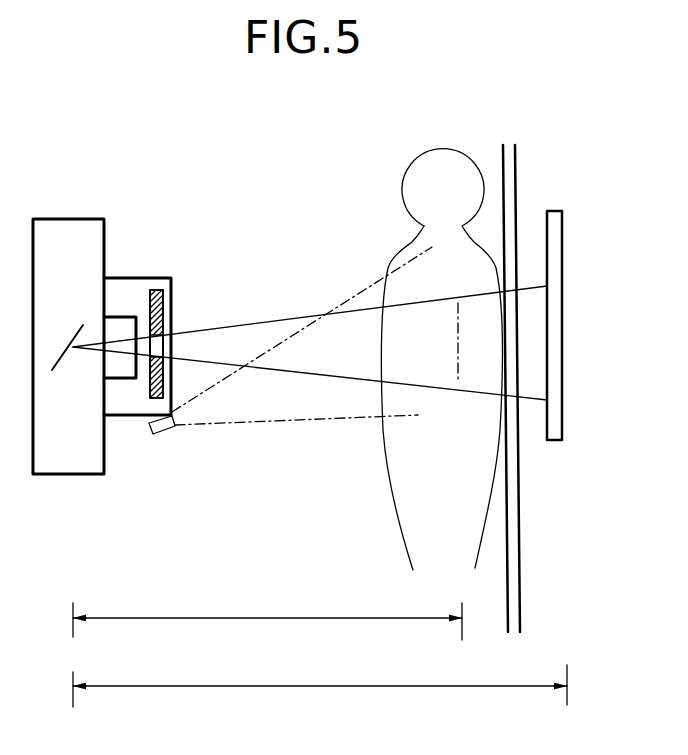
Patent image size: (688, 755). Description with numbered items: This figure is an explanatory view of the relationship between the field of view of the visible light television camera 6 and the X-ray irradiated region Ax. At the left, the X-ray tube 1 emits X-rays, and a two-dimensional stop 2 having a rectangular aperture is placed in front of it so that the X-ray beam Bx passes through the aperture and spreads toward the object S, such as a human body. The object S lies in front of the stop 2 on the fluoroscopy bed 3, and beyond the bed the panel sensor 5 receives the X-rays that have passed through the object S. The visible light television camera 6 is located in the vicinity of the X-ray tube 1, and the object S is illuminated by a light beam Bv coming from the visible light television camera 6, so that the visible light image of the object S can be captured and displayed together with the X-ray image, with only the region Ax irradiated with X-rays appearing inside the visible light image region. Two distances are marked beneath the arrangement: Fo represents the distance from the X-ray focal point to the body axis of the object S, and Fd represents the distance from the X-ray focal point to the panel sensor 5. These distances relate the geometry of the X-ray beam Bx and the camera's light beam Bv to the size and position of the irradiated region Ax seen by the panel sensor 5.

The X-ray tube 1 is at (62, 232).
The two-dimensional stop 2 is at (157, 290).
The fluoroscopy bed 3 is at (516, 166).
The panel sensor 5 is at (562, 236).
The visible light television camera 6 is at (163, 434).
The object S is at (440, 160).
The X-ray beam Bx is at (235, 327).
The light beam Bv is at (290, 422).
The X-ray irradiated region Ax is at (547, 332).
The distance from X-ray focal point to body axis of object Fo is at (267, 611).
The distance from X-ray focal point to panel sensor Fd is at (320, 679).